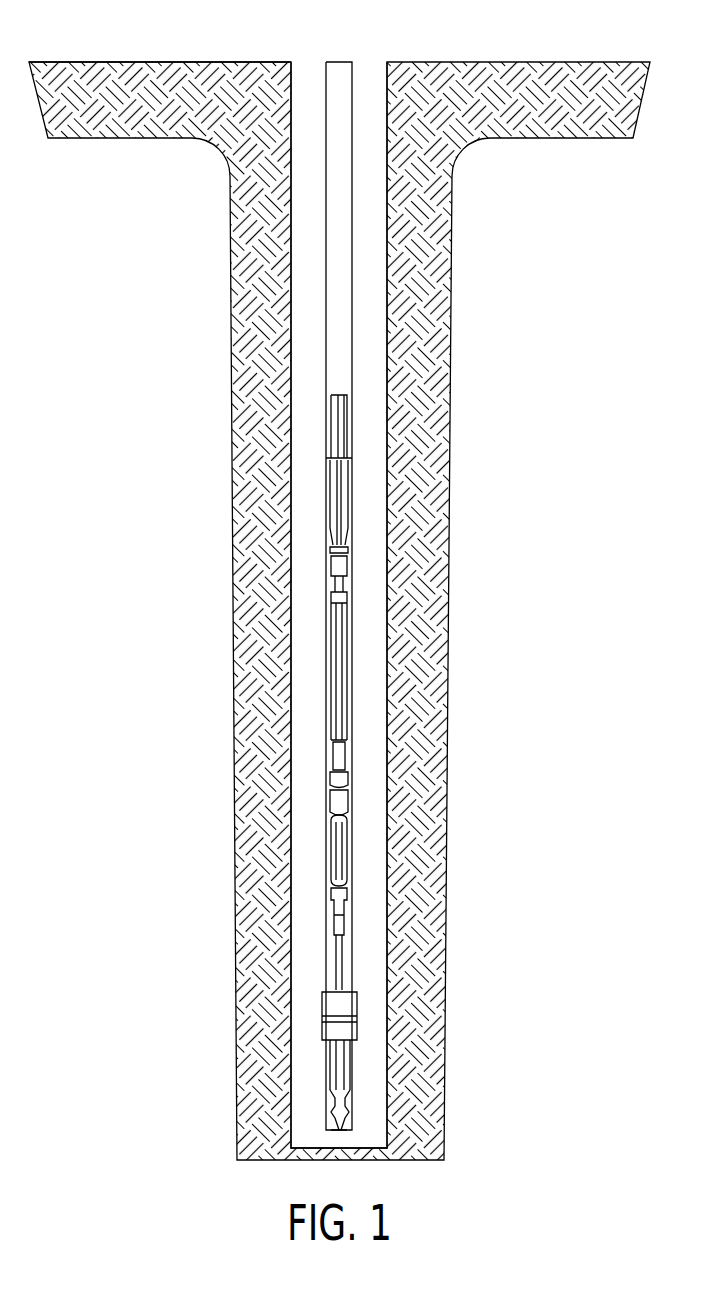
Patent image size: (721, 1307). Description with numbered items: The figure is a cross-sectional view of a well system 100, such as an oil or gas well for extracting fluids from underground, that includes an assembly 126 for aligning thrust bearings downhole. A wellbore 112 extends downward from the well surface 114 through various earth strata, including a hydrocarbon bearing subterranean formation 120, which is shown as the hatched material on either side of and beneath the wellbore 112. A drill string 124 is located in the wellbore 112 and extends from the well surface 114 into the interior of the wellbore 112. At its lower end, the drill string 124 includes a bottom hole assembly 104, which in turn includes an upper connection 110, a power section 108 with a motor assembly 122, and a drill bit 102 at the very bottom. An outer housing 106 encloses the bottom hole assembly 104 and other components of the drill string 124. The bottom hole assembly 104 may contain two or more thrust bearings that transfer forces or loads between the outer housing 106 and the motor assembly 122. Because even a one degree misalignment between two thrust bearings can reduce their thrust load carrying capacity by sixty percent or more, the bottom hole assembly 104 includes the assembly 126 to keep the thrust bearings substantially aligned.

The well system 100 is at (177, 1052).
The drill bit 102 is at (353, 1127).
The bottom hole assembly 104 is at (352, 876).
The outer housing 106 is at (352, 838).
The power section 108 is at (352, 668).
The upper connection 110 is at (352, 418).
The wellbore 112 is at (299, 333).
The well surface 114 is at (213, 62).
The subterranean formation 120 is at (523, 302).
The motor assembly 122 is at (352, 820).
The drill string 124 is at (353, 232).
The assembly for aligning thrust bearings 126 is at (353, 1020).